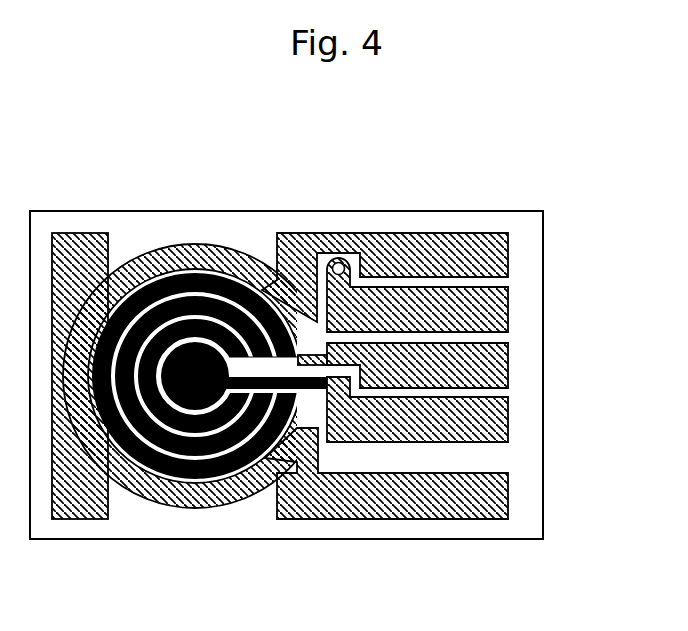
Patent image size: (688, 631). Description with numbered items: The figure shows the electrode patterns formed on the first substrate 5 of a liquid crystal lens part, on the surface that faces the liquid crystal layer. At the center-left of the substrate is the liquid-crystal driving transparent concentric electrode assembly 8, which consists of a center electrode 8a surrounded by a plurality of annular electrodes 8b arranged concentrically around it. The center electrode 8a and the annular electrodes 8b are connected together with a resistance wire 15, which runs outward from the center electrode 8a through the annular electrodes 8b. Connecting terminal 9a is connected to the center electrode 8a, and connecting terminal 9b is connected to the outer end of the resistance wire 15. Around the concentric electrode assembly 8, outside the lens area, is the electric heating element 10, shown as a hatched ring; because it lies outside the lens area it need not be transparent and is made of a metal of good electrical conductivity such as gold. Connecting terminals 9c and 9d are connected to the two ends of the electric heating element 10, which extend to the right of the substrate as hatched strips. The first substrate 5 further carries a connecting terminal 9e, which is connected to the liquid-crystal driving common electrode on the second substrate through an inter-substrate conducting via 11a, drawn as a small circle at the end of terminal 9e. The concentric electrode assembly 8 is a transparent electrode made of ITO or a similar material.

The first substrate 5 is at (460, 219).
The liquid-crystal driving transparent concentric electrode assembly 8 is at (182, 381).
The center electrode 8a is at (186, 348).
The annular electrodes 8b is at (240, 288).
The connecting terminal 9a is at (483, 420).
The connecting terminal 9b is at (483, 365).
The connecting terminal 9c is at (490, 497).
The connecting terminal 9d is at (488, 252).
The connecting terminal 9e is at (481, 245).
The electric heating element 10 is at (167, 503).
The inter-substrate conducting via 11a is at (394, 212).
The resistance wire 15 is at (292, 583).